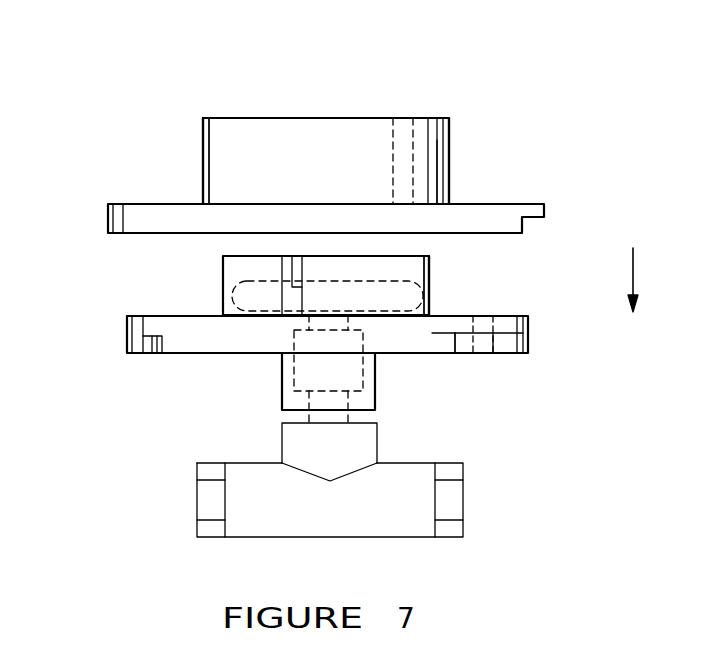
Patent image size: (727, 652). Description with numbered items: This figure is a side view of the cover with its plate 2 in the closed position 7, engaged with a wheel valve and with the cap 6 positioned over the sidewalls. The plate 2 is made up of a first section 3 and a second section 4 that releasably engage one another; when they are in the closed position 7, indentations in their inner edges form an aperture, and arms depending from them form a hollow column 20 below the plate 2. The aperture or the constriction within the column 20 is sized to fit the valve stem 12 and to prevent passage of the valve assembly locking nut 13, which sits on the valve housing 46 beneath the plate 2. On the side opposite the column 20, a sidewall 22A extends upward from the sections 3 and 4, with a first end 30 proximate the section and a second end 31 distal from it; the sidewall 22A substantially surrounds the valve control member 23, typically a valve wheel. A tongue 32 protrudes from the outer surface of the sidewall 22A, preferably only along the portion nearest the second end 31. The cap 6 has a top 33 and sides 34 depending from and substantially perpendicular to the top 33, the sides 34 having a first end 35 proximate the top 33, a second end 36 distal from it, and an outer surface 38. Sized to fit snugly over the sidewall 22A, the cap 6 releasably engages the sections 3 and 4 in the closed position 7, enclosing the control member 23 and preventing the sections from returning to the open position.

The plate 2 is at (185, 340).
The first section 3 is at (498, 325).
The second section 4 is at (498, 343).
The cap 6 is at (362, 147).
The closed position 7 is at (538, 335).
The valve stem 12 is at (327, 323).
The valve assembly locking nut 13 is at (335, 368).
The hollow column 20 is at (363, 398).
The sidewall 22A is at (235, 276).
The control member 23 is at (336, 295).
The first end 30 is at (423, 308).
The second end 31 is at (420, 268).
The tongue 32 is at (277, 265).
The top 33 is at (300, 117).
The sides 34 is at (232, 165).
The first end 35 is at (432, 135).
The second end 36 is at (438, 195).
The outer surface 38 is at (203, 143).
The valve housing 46 is at (360, 449).